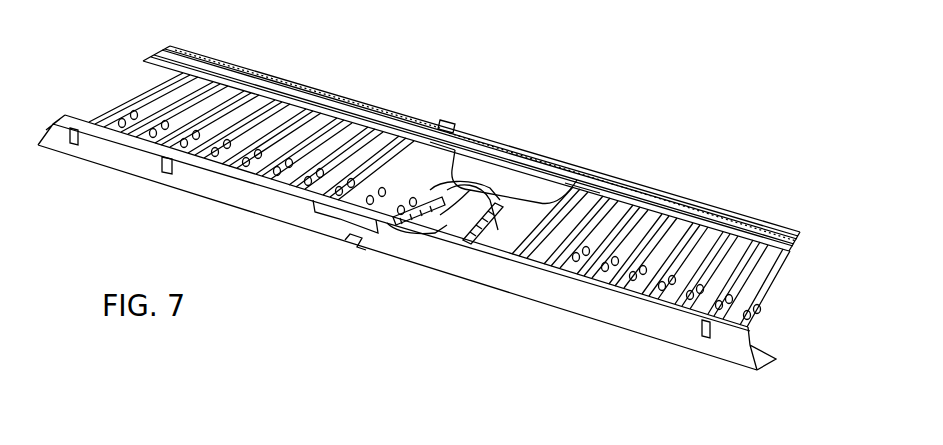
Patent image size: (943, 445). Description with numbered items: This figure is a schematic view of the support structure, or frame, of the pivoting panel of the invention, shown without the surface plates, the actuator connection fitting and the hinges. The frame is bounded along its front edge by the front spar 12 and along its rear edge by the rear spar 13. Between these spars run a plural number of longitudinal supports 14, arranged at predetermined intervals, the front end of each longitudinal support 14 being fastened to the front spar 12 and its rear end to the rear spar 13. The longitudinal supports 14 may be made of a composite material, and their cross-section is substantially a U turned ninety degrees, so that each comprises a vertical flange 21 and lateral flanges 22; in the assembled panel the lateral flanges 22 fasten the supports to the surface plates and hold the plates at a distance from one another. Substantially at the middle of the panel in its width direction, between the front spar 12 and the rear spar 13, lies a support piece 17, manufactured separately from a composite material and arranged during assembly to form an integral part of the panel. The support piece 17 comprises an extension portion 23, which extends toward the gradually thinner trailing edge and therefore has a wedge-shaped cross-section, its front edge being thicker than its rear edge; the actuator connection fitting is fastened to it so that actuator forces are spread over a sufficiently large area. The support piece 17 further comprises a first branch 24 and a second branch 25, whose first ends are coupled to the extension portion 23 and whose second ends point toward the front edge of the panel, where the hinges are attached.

The front spar 12 is at (277, 208).
The rear spar 13 is at (665, 190).
The longitudinal support 14 is at (117, 91).
The support piece 17 is at (541, 129).
The vertical flange 21 is at (757, 315).
The lateral flange 22 is at (765, 257).
The extension portion 23 is at (503, 178).
The first branch 24 is at (393, 222).
The second branch 25 is at (492, 215).